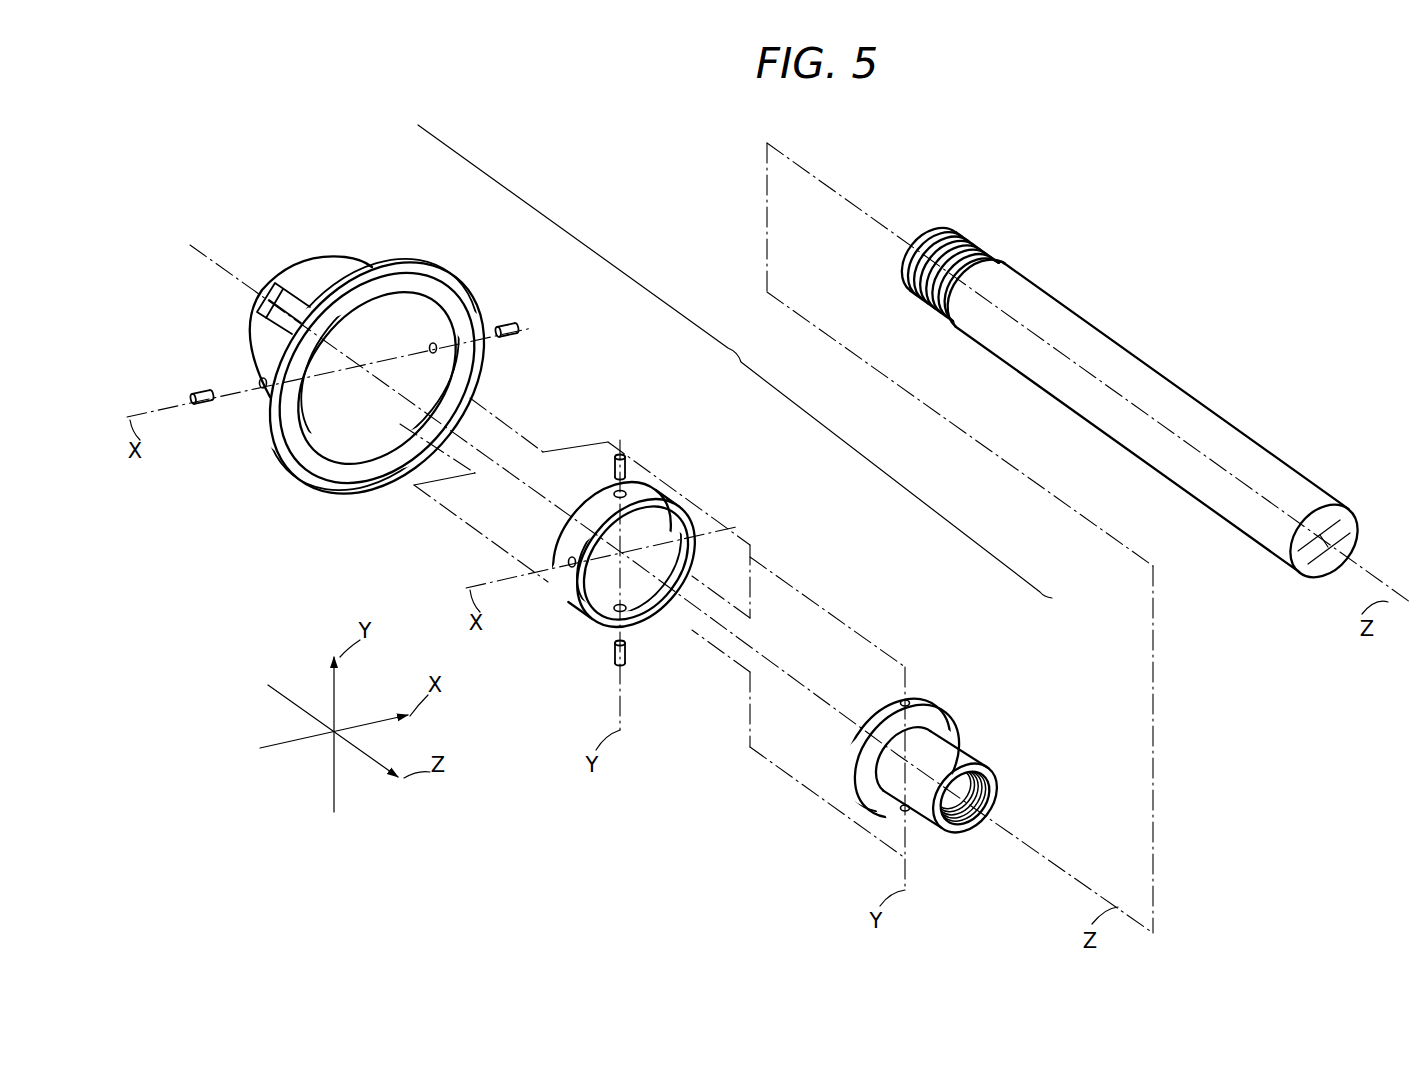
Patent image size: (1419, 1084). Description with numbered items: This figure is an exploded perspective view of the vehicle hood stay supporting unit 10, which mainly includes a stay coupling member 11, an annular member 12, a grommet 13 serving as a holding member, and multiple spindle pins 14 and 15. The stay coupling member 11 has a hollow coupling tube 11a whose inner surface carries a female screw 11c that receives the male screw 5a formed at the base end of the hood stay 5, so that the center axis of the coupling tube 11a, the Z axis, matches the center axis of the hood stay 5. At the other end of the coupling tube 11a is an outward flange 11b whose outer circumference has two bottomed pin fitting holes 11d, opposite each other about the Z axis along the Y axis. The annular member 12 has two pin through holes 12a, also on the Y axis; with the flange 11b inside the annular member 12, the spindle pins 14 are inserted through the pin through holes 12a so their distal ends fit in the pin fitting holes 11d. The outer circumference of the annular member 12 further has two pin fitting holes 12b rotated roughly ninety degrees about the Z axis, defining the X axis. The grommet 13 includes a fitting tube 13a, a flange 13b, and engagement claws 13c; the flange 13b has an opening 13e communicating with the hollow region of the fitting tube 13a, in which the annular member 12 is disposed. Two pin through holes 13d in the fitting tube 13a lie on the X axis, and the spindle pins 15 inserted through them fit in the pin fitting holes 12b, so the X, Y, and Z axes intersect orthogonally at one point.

The hood stay 5 is at (1137, 392).
The male screw 5a is at (975, 264).
The vehicle hood stay supporting unit 10 is at (735, 361).
The stay coupling member 11 is at (954, 743).
The coupling tube 11a is at (968, 744).
The flange 11b is at (941, 710).
The female screw 11c is at (992, 786).
The pin fitting holes 11d is at (909, 700).
The annular member 12 is at (635, 523).
The pin through holes 12a is at (614, 492).
The pin fitting holes 12b is at (699, 536).
The grommet 13 is at (365, 338).
The fitting tube 13a is at (343, 272).
The flange 13b is at (418, 281).
The engagement claws 13c is at (275, 287).
The pin through holes 13d is at (430, 354).
The opening 13e is at (414, 317).
The spindle pins 14 is at (620, 456).
The spindle pins 15 is at (206, 392).